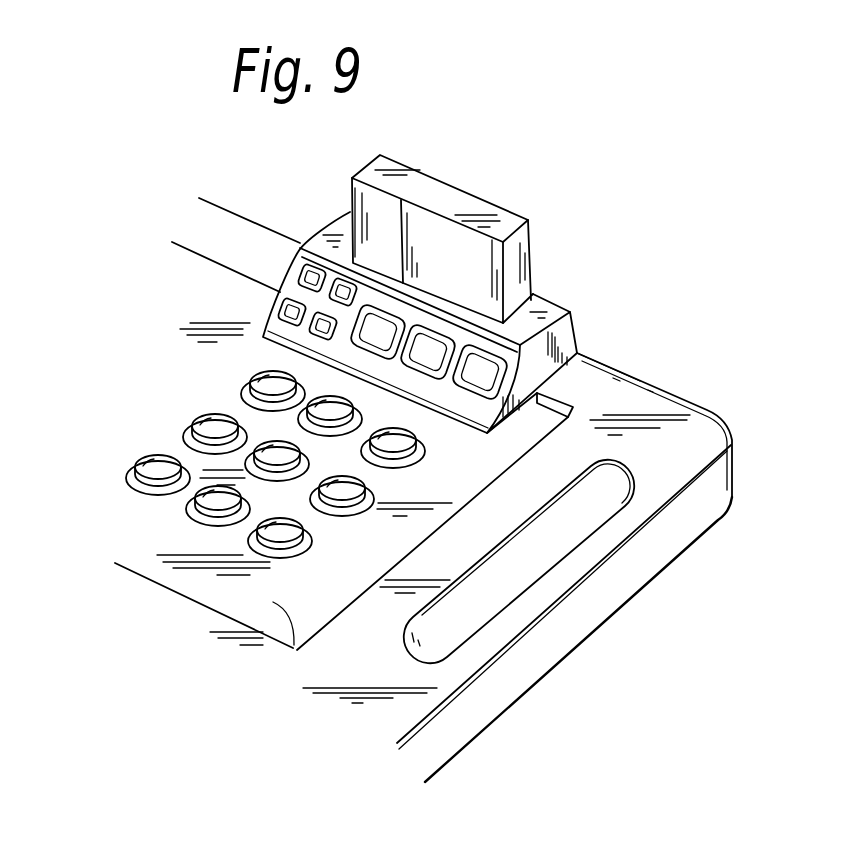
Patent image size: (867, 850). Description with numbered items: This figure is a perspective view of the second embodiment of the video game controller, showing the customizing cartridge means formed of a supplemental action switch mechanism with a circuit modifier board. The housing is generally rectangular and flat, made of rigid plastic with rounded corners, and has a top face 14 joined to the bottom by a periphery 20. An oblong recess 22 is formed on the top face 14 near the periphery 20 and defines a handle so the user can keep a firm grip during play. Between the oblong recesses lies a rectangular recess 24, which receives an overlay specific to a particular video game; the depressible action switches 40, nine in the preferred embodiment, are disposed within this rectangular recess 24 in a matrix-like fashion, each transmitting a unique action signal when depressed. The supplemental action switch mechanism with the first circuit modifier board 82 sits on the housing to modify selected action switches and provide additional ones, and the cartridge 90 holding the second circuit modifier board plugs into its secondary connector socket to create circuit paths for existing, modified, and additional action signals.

The cartridge 90 is at (443, 197).
The top face 14 is at (580, 382).
The first circuit modifier board 82 is at (492, 432).
The action switches 40 is at (160, 471).
The rectangular recess 24 is at (293, 647).
The periphery 20 is at (580, 603).
The oblong recesses 22 is at (443, 627).